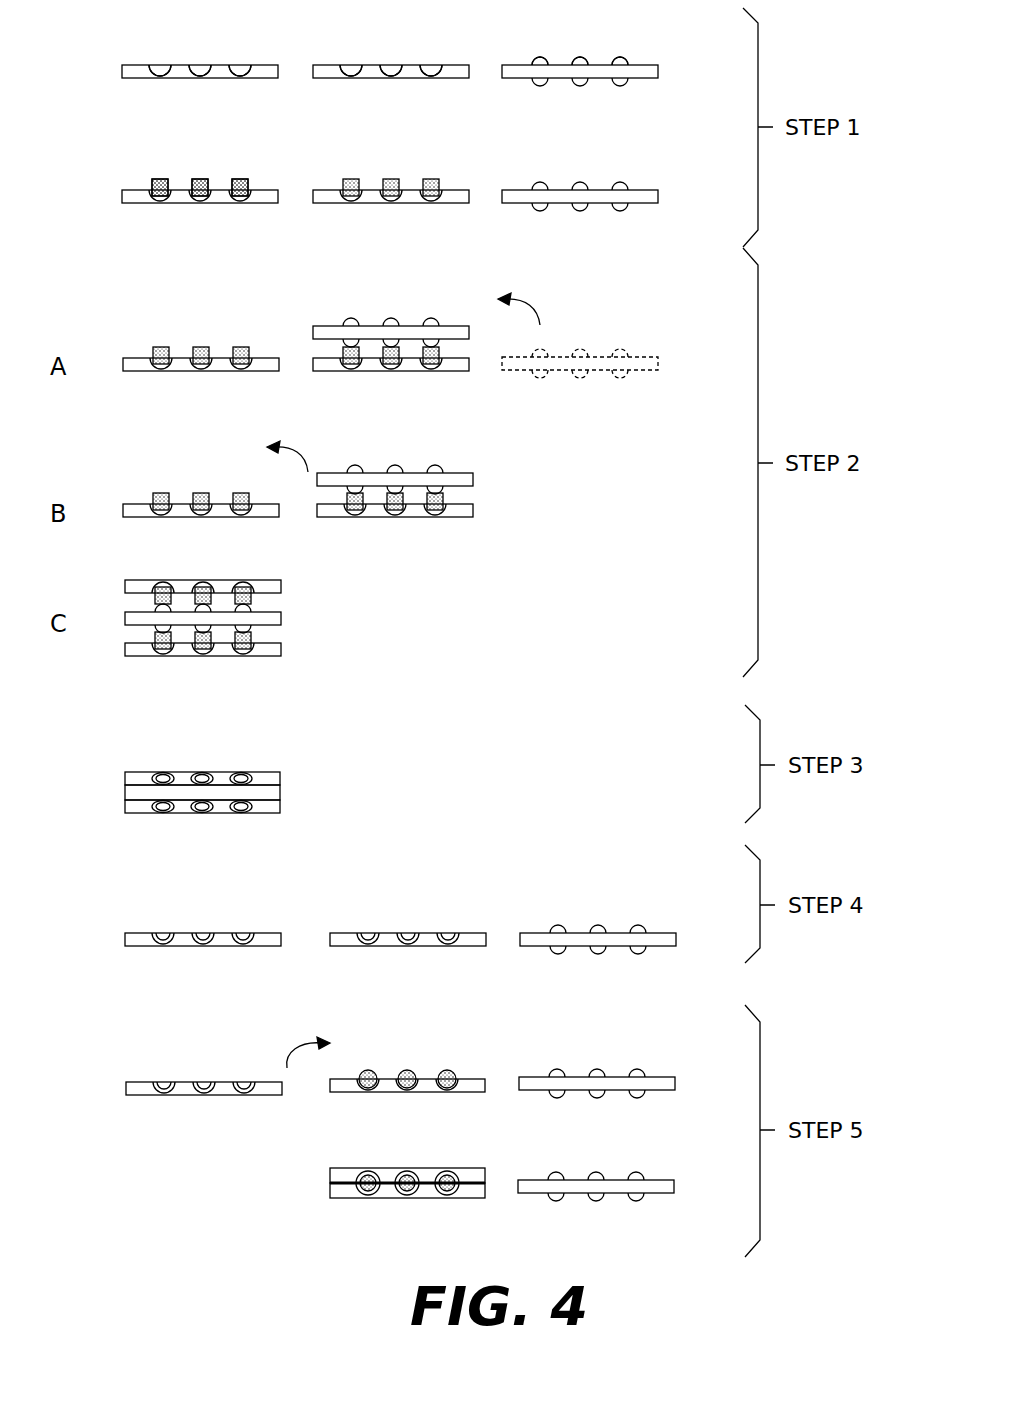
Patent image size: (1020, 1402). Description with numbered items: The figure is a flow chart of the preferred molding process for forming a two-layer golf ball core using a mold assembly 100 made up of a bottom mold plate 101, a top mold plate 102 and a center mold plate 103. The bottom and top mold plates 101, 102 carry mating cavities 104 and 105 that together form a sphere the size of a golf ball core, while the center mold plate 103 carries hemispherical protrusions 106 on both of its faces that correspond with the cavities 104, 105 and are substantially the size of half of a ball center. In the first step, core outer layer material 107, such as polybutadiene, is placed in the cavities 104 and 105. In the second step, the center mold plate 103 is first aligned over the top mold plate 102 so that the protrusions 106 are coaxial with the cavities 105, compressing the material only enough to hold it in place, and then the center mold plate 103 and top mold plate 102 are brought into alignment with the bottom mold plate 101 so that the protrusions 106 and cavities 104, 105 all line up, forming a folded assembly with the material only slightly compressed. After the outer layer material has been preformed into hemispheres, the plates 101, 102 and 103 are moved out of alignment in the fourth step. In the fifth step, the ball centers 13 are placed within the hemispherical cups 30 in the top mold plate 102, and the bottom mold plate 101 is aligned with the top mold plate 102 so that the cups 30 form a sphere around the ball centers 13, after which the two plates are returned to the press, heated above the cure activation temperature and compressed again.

The mold assembly 100 is at (148, 14).
The bottom mold plate 101 is at (262, 72).
The top mold plate 102 is at (452, 72).
The center mold plate 103 is at (642, 74).
The cavities of the bottom mold plate 104 is at (160, 65).
The cavities of the top mold plate 105 is at (351, 65).
The protrusions 106 is at (540, 57).
The core outer layer material 107 is at (160, 179).
The ball centers 13 is at (368, 1070).
The hemispherical cups 30 is at (165, 1093).